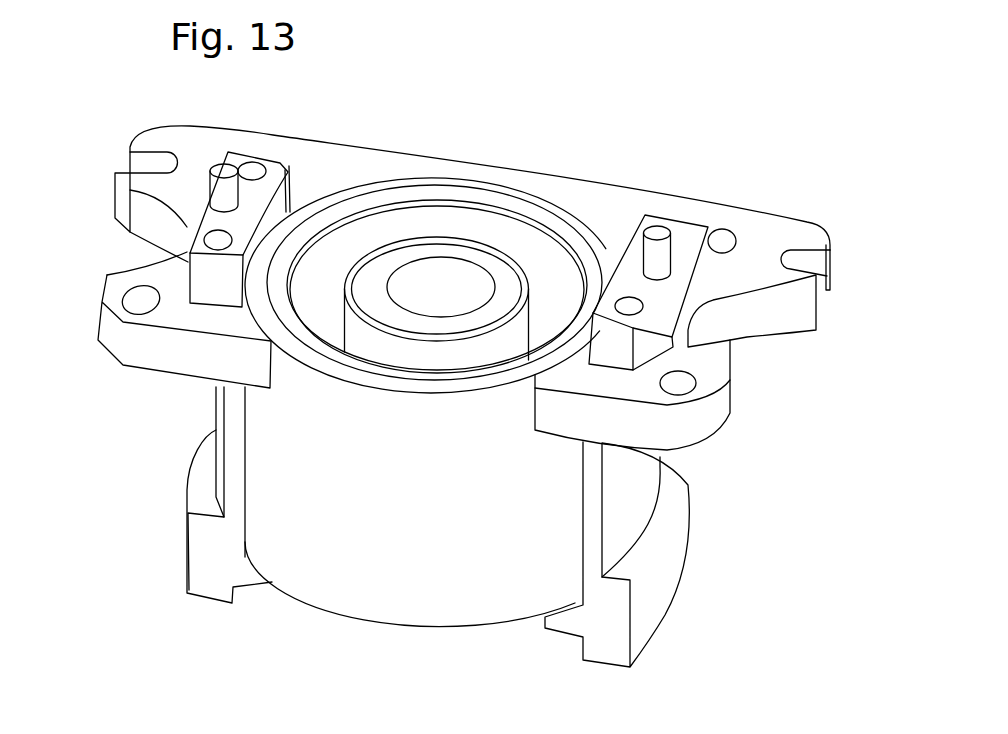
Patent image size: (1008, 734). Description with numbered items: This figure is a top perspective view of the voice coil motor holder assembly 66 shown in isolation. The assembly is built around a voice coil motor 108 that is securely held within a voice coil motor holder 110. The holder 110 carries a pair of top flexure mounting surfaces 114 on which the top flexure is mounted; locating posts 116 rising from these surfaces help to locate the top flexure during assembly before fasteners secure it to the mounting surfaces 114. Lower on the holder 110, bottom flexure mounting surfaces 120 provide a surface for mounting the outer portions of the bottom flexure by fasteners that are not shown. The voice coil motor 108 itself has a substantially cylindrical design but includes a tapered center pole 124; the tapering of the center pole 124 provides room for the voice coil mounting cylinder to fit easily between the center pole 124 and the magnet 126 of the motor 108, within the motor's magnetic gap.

The voice coil motor holder assembly 66 is at (772, 443).
The voice coil motor 108 is at (356, 578).
The voice coil motor holder 110 is at (290, 143).
The top flexure mounting surfaces 114 is at (280, 163).
The locating posts 116 is at (222, 185).
The bottom flexure mounting surfaces 120 is at (182, 586).
The center pole 124 is at (468, 256).
The magnet 126 is at (554, 233).